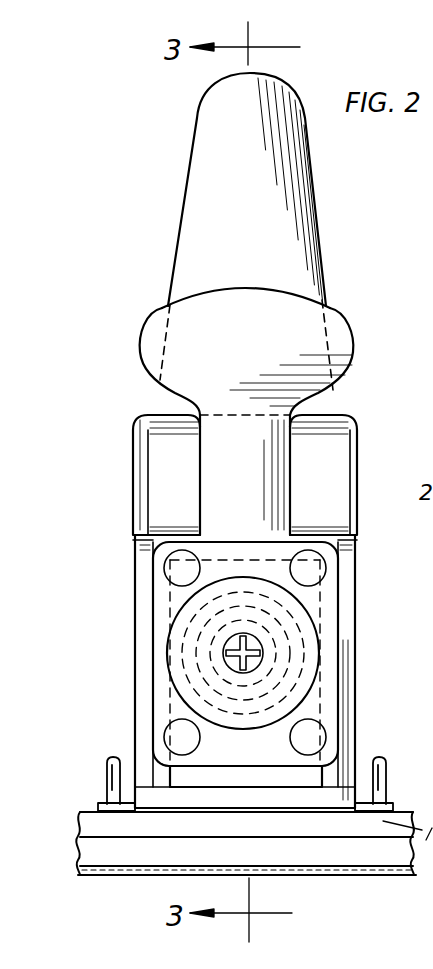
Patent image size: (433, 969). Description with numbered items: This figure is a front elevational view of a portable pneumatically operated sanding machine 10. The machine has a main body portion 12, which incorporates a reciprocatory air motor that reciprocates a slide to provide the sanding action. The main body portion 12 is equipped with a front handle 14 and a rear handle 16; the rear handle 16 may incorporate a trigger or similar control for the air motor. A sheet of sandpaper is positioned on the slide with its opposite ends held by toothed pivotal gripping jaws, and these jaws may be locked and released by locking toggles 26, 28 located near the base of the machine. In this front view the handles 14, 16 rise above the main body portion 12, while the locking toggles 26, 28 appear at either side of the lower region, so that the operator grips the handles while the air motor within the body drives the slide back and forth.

The sanding machine 10 is at (352, 240).
The main body portion 12 is at (345, 660).
The front handle 14 is at (352, 343).
The rear handle 16 is at (208, 132).
The locking toggle 26 is at (107, 770).
The locking toggle 28 is at (420, 774).